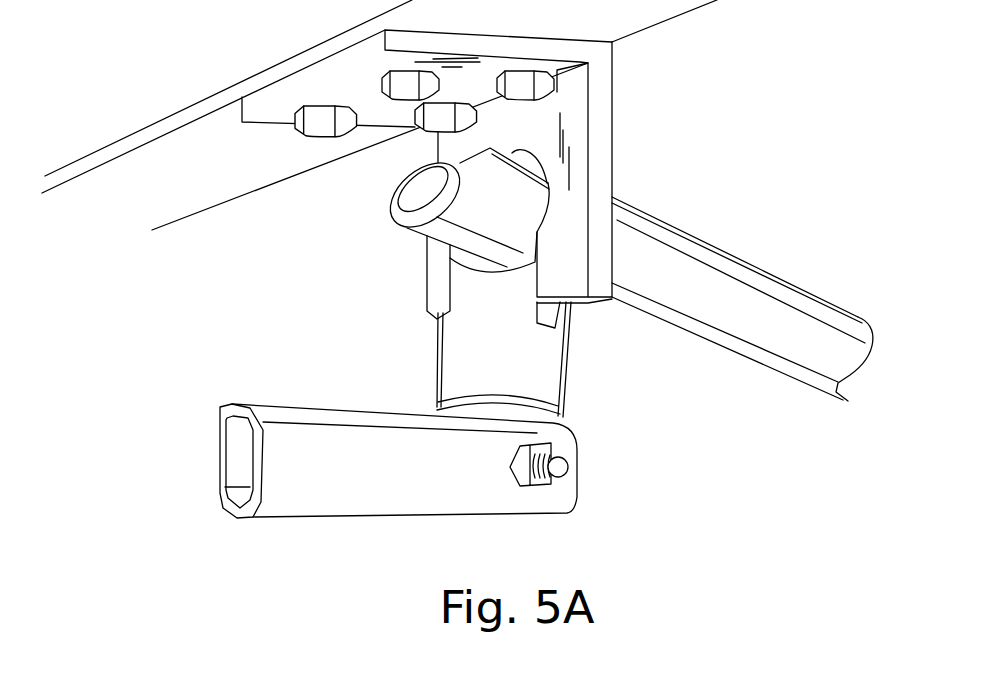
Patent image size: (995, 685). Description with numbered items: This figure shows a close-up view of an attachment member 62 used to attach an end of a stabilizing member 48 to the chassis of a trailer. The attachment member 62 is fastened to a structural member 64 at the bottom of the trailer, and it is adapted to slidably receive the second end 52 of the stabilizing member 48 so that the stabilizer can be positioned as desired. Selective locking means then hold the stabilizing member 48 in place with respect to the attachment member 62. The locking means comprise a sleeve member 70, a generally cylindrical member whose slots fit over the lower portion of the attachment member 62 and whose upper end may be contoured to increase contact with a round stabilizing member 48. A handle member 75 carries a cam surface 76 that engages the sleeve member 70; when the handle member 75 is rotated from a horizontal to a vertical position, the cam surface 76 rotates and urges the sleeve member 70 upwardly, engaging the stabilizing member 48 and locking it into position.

The stabilizing member 48 is at (720, 248).
The second end of stabilizing member 52 is at (513, 220).
The attachment member 62 is at (605, 105).
The structural member 64 is at (576, 29).
The sleeve member 70 is at (567, 373).
The handle member 75 is at (375, 486).
The cam surface 76 is at (567, 428).